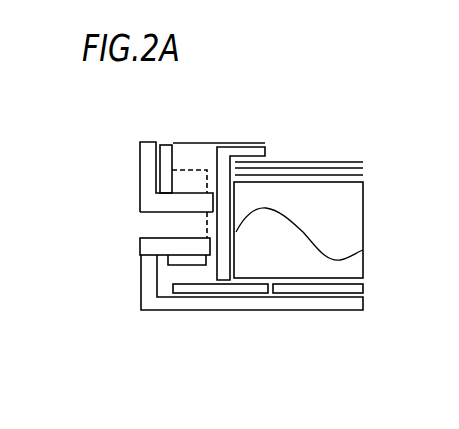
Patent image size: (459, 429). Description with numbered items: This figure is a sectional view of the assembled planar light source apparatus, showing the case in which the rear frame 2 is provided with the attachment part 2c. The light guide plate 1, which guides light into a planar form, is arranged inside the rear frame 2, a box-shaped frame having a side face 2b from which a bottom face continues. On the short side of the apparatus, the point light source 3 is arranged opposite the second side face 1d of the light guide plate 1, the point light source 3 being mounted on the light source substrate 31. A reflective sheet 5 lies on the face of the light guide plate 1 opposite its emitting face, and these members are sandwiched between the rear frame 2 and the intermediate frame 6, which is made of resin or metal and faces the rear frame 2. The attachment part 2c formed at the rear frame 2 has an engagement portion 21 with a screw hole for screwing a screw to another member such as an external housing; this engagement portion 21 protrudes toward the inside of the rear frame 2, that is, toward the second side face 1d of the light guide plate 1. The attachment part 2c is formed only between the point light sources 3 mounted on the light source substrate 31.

The light guide plate 1 is at (327, 195).
The second side face 1d is at (363, 250).
The rear frame 2 is at (143, 308).
The side face 2b is at (143, 146).
The attachment part 2c is at (140, 218).
The point light source 3 is at (178, 260).
The engagement portion 21 is at (180, 243).
The light source substrate 31 is at (170, 147).
The reflective sheet 5 is at (318, 292).
The intermediate frame 6 is at (254, 148).